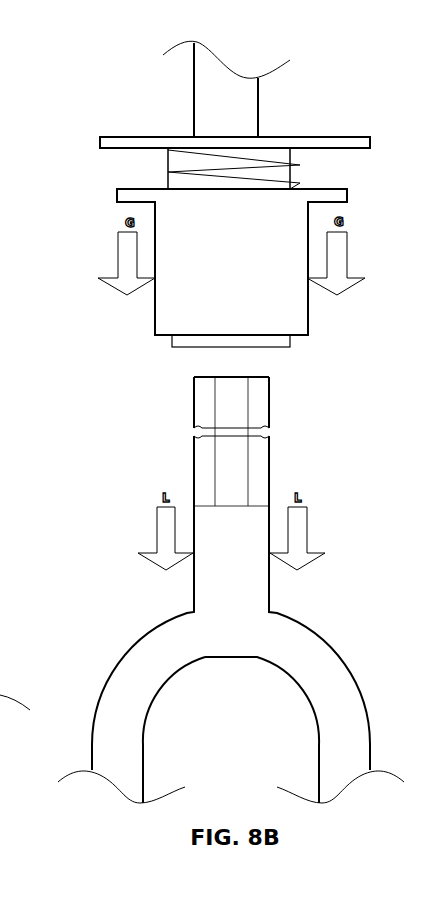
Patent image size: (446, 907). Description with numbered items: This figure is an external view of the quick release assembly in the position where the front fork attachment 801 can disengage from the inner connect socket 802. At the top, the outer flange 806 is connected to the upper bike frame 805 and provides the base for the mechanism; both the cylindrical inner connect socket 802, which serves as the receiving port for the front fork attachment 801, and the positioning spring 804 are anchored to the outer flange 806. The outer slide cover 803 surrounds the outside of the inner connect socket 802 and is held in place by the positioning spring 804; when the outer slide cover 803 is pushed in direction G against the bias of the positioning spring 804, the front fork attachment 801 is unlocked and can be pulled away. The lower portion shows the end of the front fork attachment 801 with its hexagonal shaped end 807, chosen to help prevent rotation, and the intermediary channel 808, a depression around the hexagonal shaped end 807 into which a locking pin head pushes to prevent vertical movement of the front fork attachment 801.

The front fork attachment 801 is at (153, 632).
The inner connect socket 802 is at (293, 172).
The outer slide cover 803 is at (308, 313).
The positioning spring 804 is at (176, 170).
The upper bike frame 805 is at (192, 103).
The outer flange 806 is at (100, 138).
The hexagonal shaped end 807 is at (190, 407).
The intermediary channel 808 is at (271, 432).